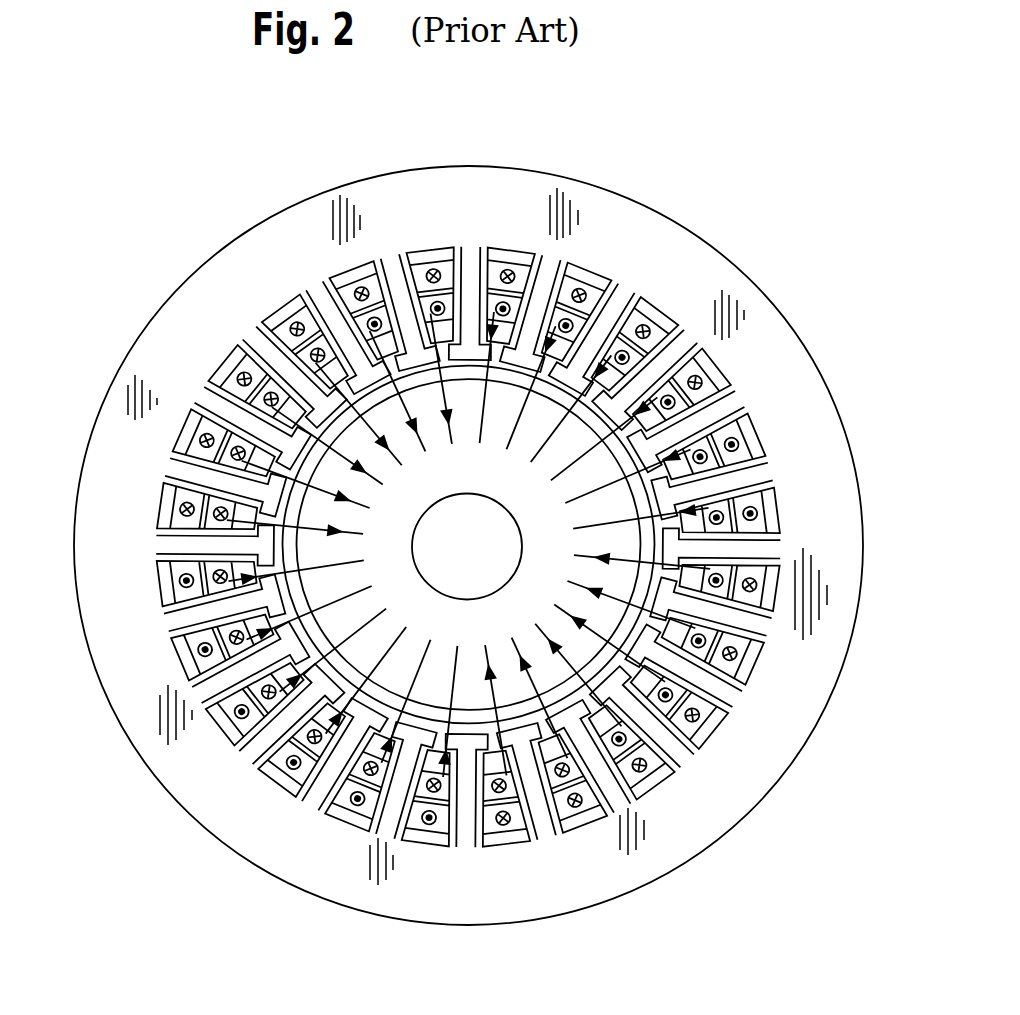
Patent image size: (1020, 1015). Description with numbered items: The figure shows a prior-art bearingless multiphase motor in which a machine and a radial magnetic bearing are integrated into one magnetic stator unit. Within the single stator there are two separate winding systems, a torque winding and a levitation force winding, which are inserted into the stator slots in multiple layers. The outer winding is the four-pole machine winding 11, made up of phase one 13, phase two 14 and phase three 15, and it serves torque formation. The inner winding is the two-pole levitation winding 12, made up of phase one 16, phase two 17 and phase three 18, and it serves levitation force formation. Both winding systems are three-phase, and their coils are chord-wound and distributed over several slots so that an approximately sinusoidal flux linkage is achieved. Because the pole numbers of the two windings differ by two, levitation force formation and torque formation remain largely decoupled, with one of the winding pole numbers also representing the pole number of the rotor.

The machine winding 11 is at (393, 330).
The levitation winding 12 is at (327, 192).
The phase 1 of machine winding 13 is at (577, 286).
The phase 2 of machine winding 14 is at (433, 272).
The phase 3 of machine winding 15 is at (213, 376).
The phase 1 of levitation winding 16 is at (469, 545).
The phase 2 of levitation winding 17 is at (468, 544).
The phase 3 of levitation winding 18 is at (468, 545).